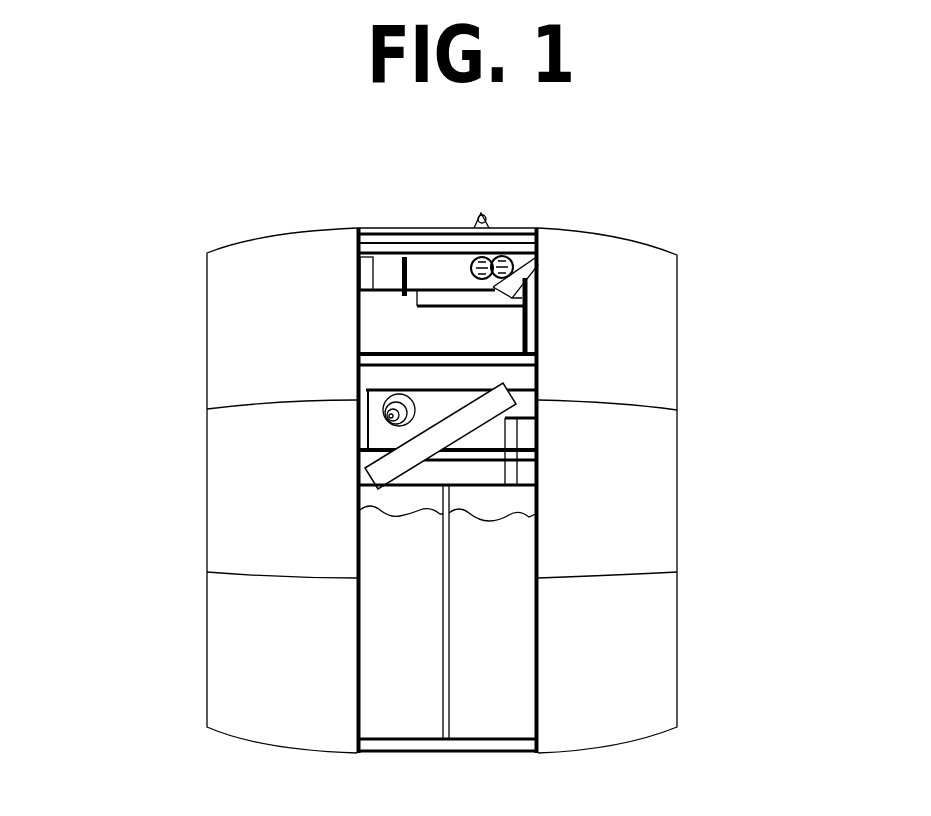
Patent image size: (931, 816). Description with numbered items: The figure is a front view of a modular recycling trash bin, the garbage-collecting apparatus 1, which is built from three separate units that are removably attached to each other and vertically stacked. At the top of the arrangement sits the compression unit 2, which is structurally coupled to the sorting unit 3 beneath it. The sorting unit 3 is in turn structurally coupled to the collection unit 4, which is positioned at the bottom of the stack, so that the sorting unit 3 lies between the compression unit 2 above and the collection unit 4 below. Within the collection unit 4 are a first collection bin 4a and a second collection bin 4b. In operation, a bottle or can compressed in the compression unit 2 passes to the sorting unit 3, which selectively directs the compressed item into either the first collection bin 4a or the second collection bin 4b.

The garbage-collecting apparatus 1 is at (438, 166).
The compression unit 2 is at (257, 305).
The sorting unit 3 is at (260, 503).
The collection unit 4 is at (253, 720).
The first collection bin 4a is at (413, 723).
The second collection bin 4b is at (528, 723).